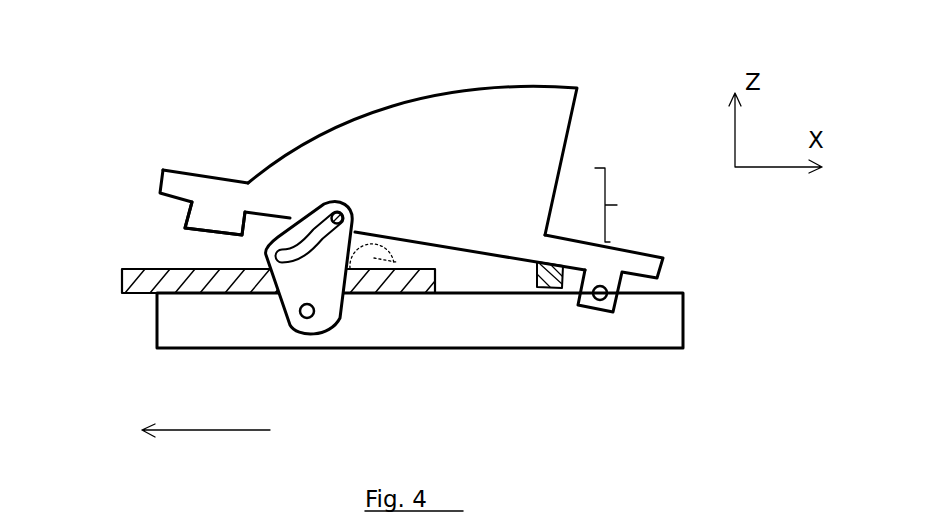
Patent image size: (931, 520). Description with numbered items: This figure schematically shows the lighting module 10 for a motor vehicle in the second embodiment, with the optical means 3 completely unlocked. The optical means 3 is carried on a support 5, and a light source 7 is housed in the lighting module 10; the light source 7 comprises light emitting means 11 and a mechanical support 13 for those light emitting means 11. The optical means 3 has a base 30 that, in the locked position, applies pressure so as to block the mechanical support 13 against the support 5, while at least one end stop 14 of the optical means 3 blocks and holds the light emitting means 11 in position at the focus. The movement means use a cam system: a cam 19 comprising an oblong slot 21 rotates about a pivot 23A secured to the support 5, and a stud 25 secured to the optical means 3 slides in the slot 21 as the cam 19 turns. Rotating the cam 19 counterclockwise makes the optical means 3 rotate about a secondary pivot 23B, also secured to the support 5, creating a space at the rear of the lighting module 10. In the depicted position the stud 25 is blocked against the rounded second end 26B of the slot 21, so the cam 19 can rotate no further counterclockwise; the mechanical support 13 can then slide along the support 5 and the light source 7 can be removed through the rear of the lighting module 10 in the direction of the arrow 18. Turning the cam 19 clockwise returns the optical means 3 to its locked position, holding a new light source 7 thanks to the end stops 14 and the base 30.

The lighting module 10 is at (222, 78).
The optical means 3 is at (542, 113).
The support 5 is at (652, 327).
The light source 7 is at (619, 205).
The light emitting means 11 is at (423, 253).
The mechanical support 13 is at (430, 280).
The end stop 14 is at (560, 288).
The arrow 18 is at (200, 432).
The cam 19 is at (290, 296).
The slot 21 is at (271, 253).
The pivot 23A is at (302, 315).
The secondary pivot 23B is at (608, 293).
The stud 25 is at (315, 203).
The second end 26B is at (345, 218).
The base 30 is at (176, 184).